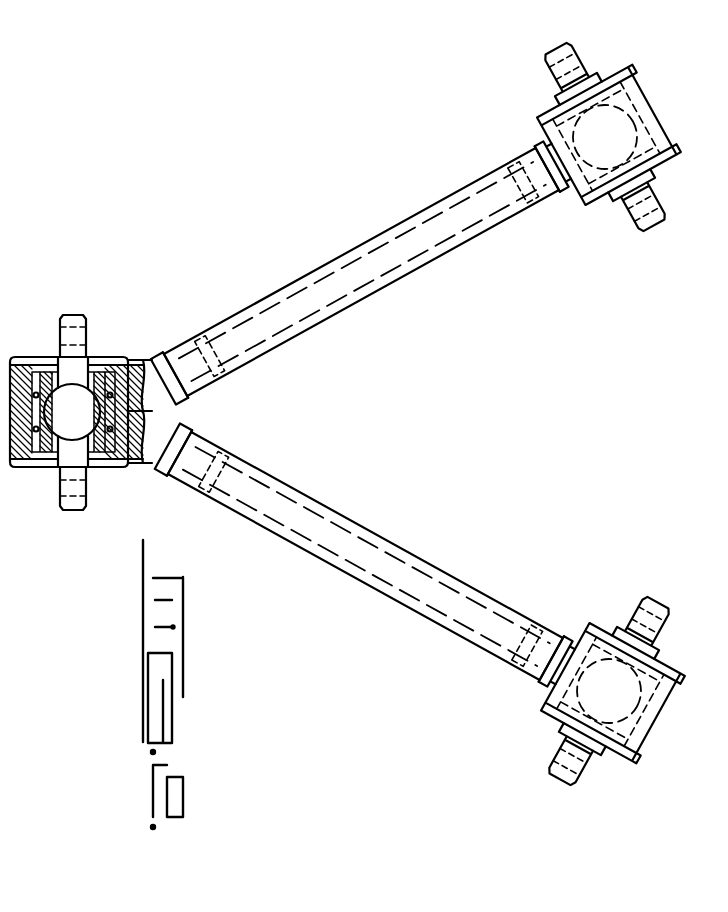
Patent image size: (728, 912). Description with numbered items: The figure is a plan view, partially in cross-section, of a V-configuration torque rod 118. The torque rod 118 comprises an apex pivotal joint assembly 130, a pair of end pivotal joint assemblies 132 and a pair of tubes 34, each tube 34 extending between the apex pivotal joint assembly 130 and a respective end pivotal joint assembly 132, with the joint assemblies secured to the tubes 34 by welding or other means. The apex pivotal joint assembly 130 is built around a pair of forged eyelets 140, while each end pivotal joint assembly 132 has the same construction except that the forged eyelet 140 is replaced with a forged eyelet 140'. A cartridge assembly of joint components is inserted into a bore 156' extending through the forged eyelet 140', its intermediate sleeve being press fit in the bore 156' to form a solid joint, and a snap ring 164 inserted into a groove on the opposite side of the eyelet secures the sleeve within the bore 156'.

The V-configuration torque rod 118 is at (488, 428).
The apex pivotal joint assembly 130 is at (112, 312).
The forged eyelet 140 is at (141, 403).
The tube 34 is at (424, 263).
The forged eyelet 140' is at (526, 460).
The end pivotal joint assembly 132 is at (638, 251).
The bore 156' is at (626, 437).
The snap ring 164 is at (679, 156).